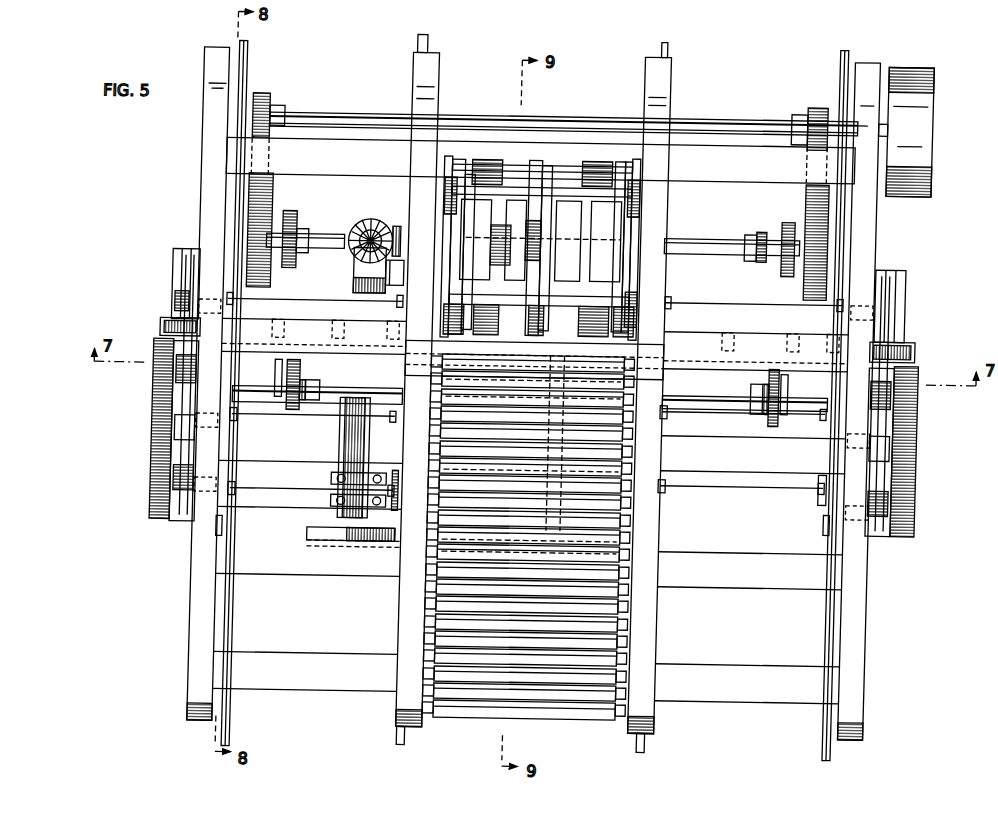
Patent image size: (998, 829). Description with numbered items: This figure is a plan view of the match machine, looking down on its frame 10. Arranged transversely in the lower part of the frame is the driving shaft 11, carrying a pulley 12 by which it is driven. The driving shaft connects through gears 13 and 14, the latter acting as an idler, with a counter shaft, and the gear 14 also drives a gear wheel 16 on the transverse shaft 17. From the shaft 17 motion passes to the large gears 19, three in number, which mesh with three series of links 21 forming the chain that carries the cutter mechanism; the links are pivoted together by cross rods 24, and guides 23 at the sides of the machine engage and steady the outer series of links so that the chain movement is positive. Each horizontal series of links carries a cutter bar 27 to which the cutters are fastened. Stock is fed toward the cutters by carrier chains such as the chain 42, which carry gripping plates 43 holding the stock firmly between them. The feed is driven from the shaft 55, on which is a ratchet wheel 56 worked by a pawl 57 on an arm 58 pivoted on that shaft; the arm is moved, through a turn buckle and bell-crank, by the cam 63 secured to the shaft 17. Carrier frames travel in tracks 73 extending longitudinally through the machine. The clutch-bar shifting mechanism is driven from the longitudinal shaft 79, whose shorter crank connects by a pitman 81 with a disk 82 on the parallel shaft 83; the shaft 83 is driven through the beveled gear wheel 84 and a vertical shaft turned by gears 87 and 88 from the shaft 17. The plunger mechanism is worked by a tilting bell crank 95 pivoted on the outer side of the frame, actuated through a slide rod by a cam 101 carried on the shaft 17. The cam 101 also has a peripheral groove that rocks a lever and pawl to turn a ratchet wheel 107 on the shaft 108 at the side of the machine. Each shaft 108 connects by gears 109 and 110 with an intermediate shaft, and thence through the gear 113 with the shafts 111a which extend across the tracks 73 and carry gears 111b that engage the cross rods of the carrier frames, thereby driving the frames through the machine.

The frame 10 is at (195, 618).
The driving shaft 11 is at (690, 116).
The pulley 12 is at (925, 125).
The gear 13 is at (258, 97).
The idler gear 14 is at (268, 142).
The gear wheel 16 is at (243, 223).
The shaft 17 is at (310, 237).
The large gears 19 is at (439, 190).
The links 21 is at (458, 160).
The guides 23 is at (438, 336).
The cross rods 24 is at (500, 170).
The cutter bar 27 is at (586, 185).
The feed chain 42 is at (625, 615).
The gripping plates 43 is at (610, 665).
The shaft 55 is at (380, 395).
The ratchet wheel 56 is at (319, 388).
The pawl 57 is at (292, 363).
The arm 58 is at (274, 378).
The cam 63 is at (285, 214).
The tracks 73 is at (238, 712).
The shaft 79 is at (582, 490).
The pitman 81 is at (372, 549).
The disk 82 is at (330, 535).
The shaft 83 is at (352, 430).
The beveled gear wheel 84 is at (400, 272).
The gear 87 is at (362, 222).
The gear 88 is at (396, 236).
The tilting bell crank 95 is at (158, 332).
The cam 101 is at (169, 264).
The ratchet wheel 107 is at (172, 306).
The shaft 108 is at (165, 440).
The gear 109 is at (182, 505).
The gear 110 is at (190, 495).
The shafts 111a is at (266, 420).
The gears 111b is at (237, 490).
The gear 113 is at (228, 540).